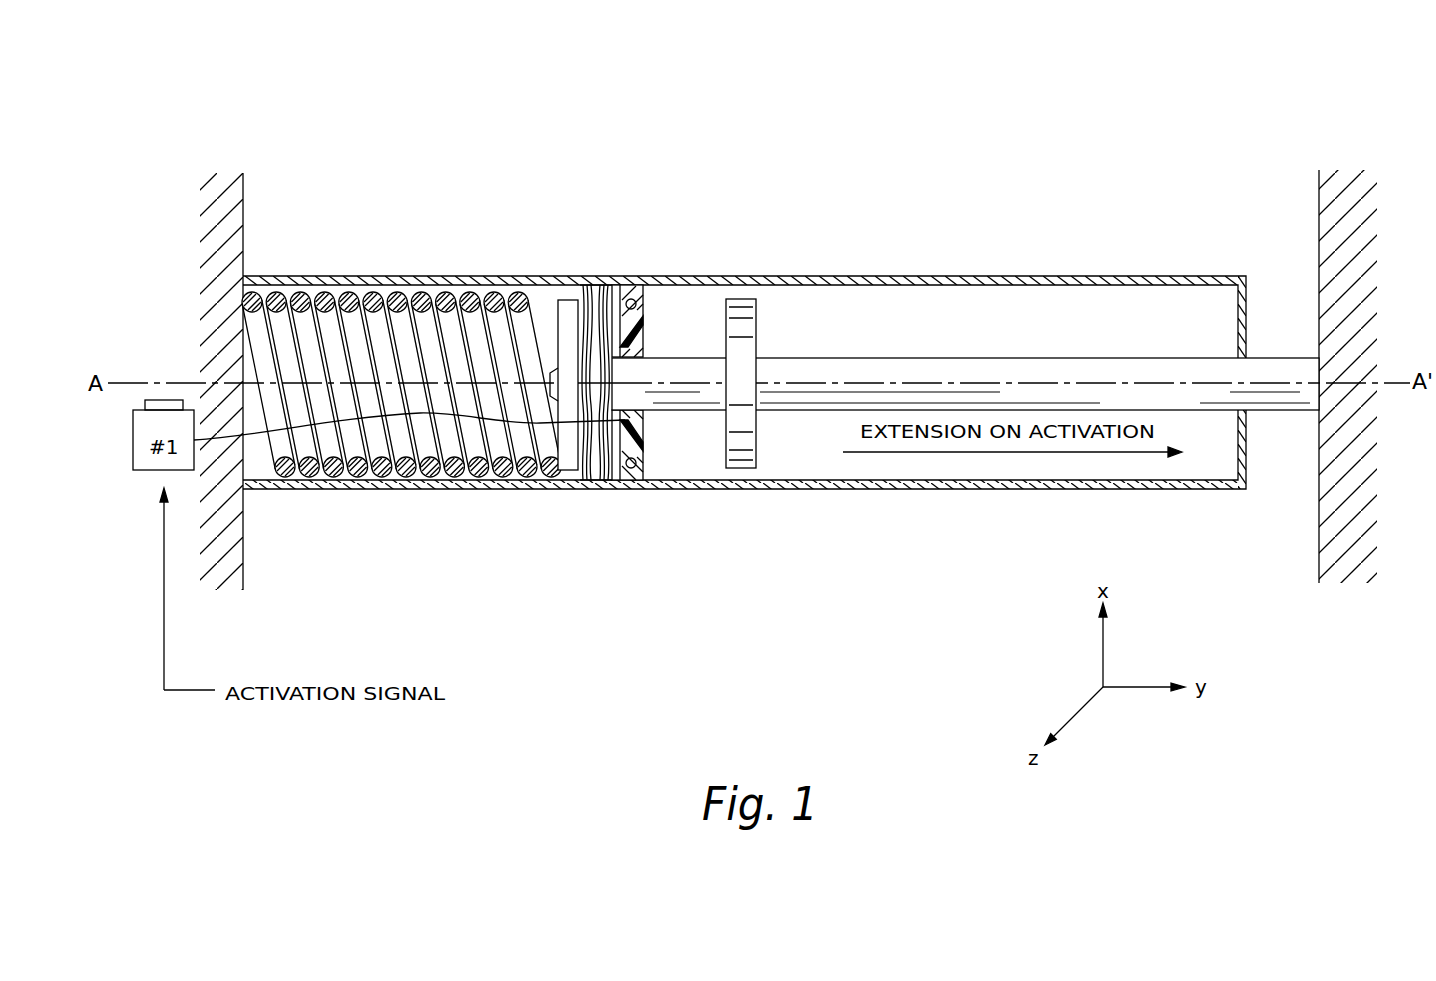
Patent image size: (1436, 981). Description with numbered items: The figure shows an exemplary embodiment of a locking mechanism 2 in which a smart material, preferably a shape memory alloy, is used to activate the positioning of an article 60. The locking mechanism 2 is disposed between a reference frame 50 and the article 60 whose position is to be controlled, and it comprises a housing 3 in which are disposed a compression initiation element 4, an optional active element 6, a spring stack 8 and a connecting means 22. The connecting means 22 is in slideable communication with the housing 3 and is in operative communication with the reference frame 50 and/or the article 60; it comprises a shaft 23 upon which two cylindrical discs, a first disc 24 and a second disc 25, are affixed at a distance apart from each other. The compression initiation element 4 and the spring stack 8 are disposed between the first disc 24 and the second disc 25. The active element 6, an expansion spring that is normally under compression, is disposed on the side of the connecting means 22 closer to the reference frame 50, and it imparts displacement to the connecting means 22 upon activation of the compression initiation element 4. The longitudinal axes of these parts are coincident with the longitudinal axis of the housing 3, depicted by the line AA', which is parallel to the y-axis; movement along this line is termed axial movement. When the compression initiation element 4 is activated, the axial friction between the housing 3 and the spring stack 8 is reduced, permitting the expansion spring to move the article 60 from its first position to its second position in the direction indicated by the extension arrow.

The locking mechanism 2 is at (780, 299).
The housing 3 is at (893, 276).
The compression initiation element 4 is at (645, 442).
The active element 6 is at (405, 474).
The spring stack 8 is at (592, 482).
The connecting means 22 is at (965, 288).
The shaft 23 is at (1006, 370).
The first disc 24 is at (560, 335).
The second disc 25 is at (752, 328).
The reference frame 50 is at (243, 211).
The article 60 is at (1319, 492).